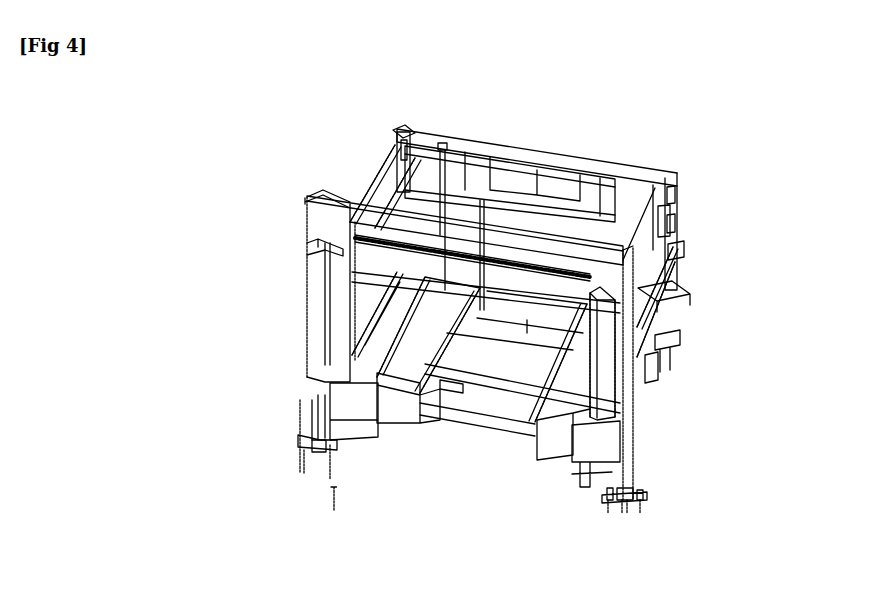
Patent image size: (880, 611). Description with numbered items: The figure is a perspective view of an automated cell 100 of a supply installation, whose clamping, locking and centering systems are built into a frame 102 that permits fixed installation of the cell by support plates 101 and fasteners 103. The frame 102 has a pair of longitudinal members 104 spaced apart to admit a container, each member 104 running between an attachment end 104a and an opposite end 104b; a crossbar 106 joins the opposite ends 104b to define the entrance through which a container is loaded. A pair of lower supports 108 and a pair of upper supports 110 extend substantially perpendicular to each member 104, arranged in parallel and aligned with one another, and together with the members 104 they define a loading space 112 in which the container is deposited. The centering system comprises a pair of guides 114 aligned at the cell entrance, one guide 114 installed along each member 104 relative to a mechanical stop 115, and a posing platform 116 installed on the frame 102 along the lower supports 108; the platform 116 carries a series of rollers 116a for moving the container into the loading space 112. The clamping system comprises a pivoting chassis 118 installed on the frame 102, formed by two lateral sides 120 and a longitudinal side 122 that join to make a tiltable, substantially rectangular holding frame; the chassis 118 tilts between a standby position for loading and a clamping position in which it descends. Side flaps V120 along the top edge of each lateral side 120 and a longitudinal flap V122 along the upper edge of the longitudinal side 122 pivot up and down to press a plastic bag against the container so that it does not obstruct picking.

The cell 100 is at (575, 132).
The support plates 101 is at (317, 448).
The frame 102 is at (305, 218).
The fasteners 103 is at (298, 446).
The longitudinal members 104 is at (339, 245).
The attachment end 104a is at (327, 447).
The opposite end 104b is at (317, 207).
The crossbar 106 is at (362, 195).
The lower supports 108 is at (678, 350).
The upper supports 110 is at (360, 297).
The loading space 112 is at (468, 247).
The guides 114 is at (315, 292).
The mechanical stop 115 is at (343, 395).
The posing platform 116 is at (420, 360).
The rollers 116a is at (400, 400).
The pivoting chassis 118 is at (665, 168).
The lateral sides 120 is at (387, 180).
The longitudinal side 122 is at (608, 195).
The side flaps V120 is at (400, 130).
The longitudinal flap V122 is at (520, 152).